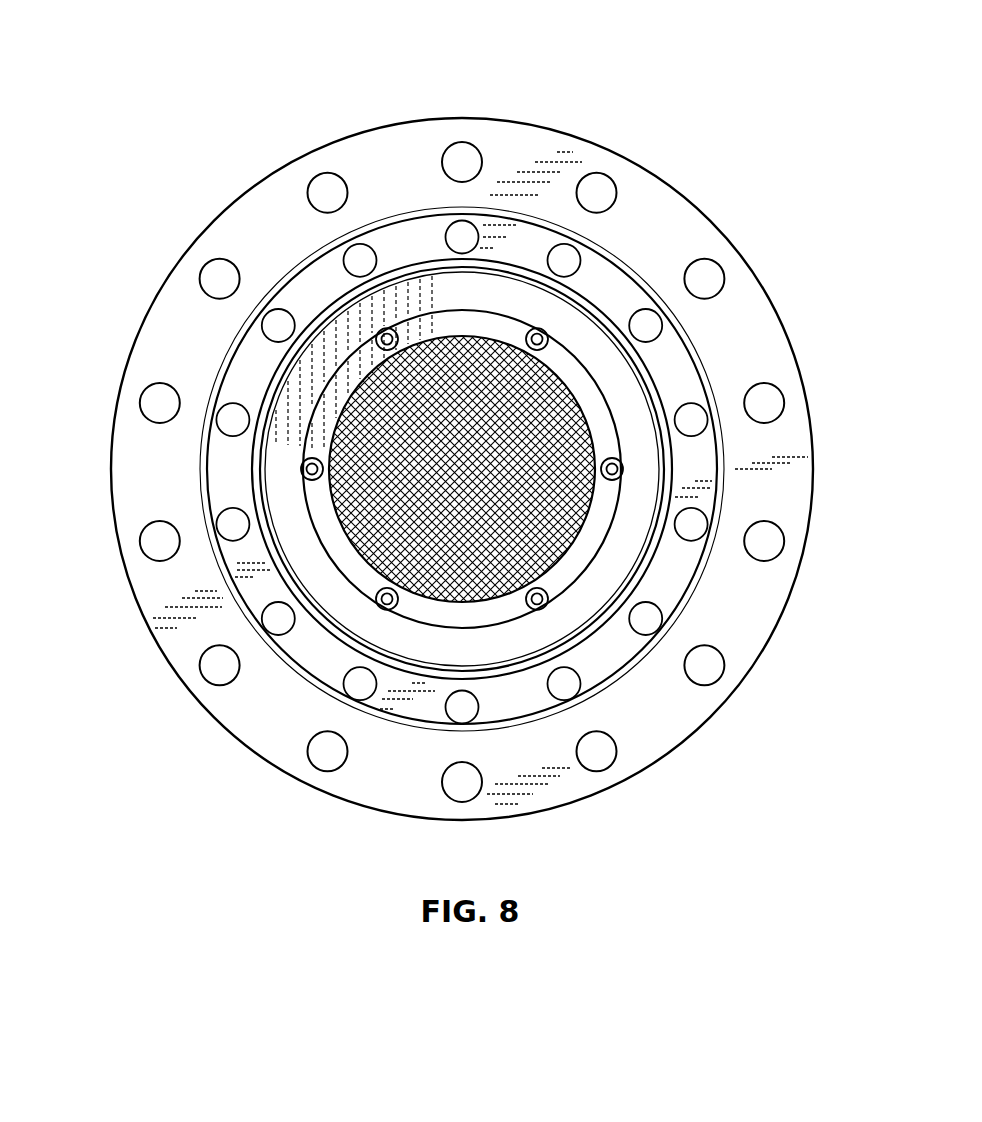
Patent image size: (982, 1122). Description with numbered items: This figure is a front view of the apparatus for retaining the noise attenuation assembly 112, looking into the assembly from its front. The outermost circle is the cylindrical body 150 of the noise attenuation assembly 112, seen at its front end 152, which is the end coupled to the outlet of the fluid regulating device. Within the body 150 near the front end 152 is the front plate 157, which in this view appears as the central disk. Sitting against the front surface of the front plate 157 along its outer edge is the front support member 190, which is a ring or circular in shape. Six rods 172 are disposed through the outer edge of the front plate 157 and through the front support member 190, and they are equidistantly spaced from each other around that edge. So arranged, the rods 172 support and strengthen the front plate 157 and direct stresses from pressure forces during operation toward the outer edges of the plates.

The noise attenuation assembly 112 is at (387, 98).
The body 150 is at (777, 628).
The front end 152 is at (740, 687).
The front plate 157 is at (553, 408).
The rod 172 is at (378, 330).
The front support member 190 is at (337, 543).